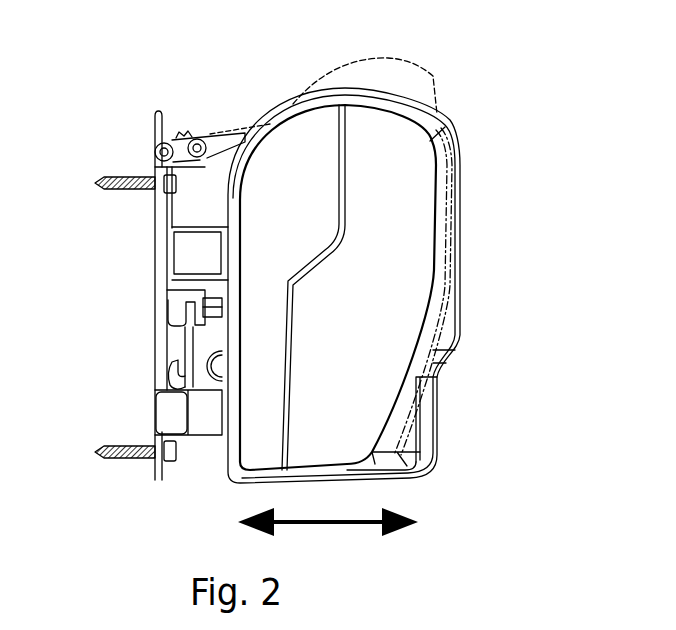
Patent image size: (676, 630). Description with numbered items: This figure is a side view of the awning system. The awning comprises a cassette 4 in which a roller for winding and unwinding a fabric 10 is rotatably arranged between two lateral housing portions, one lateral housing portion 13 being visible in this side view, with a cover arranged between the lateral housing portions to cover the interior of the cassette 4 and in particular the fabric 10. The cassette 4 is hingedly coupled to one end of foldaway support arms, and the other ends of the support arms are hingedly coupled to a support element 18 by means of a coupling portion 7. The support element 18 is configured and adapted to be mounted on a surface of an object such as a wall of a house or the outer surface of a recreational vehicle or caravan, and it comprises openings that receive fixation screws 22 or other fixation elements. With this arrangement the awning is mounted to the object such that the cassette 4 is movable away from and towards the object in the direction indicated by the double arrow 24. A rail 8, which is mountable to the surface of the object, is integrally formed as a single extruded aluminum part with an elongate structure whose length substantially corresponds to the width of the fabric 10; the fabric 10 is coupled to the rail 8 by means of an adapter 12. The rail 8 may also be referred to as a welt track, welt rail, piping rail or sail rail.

The cassette 4 is at (498, 182).
The coupling portion 7 is at (168, 345).
The rail 8 is at (141, 126).
The fabric 10 is at (246, 124).
The adapter 12 is at (195, 178).
The lateral housing portion 13 is at (366, 303).
The support element 18 is at (160, 272).
The fixation screw 22 is at (104, 178).
The double arrow 24 is at (325, 523).